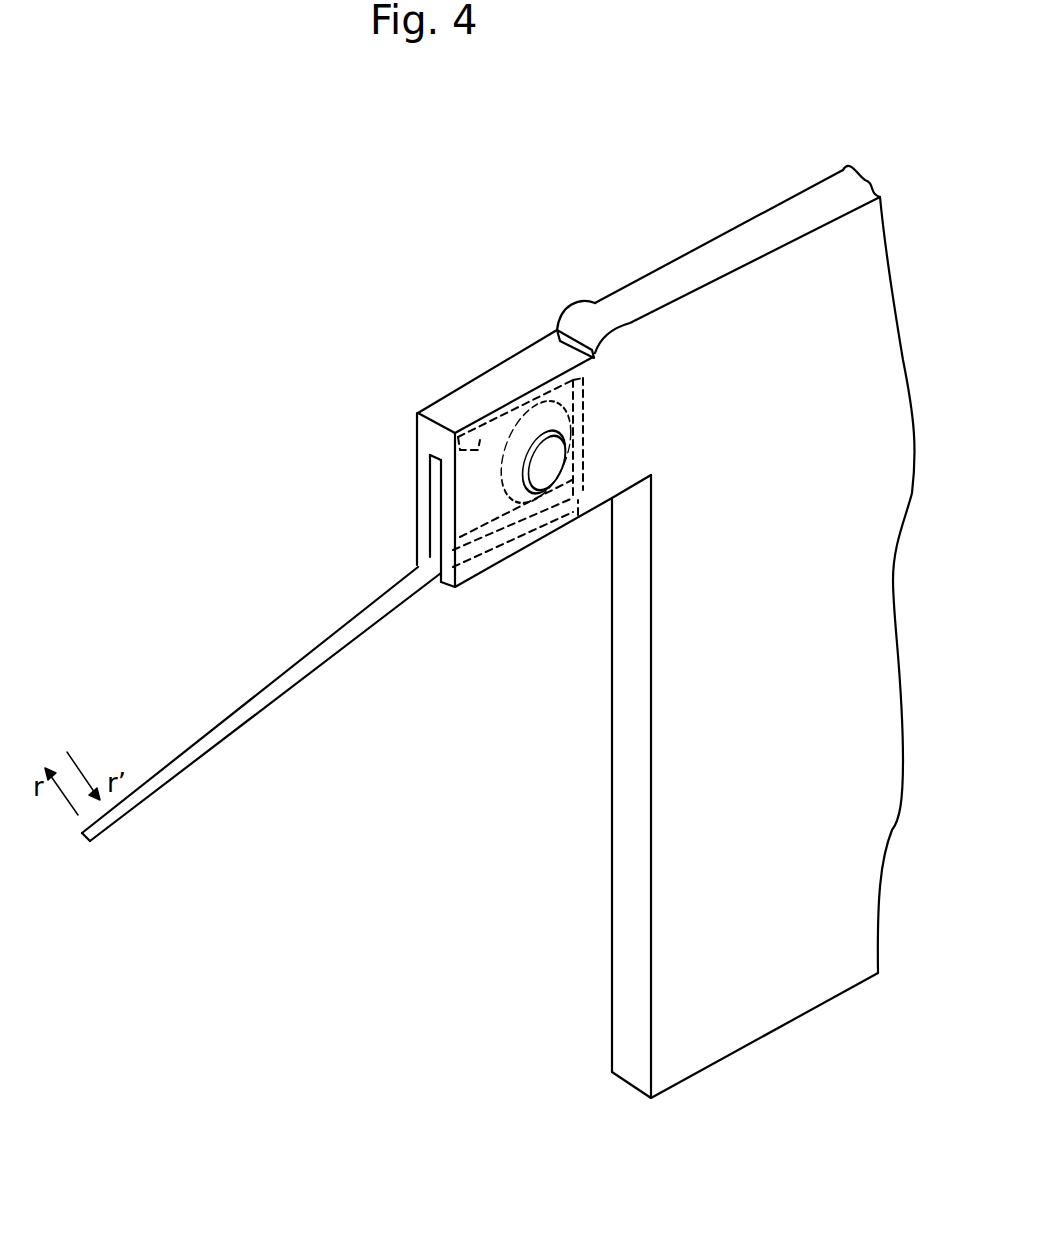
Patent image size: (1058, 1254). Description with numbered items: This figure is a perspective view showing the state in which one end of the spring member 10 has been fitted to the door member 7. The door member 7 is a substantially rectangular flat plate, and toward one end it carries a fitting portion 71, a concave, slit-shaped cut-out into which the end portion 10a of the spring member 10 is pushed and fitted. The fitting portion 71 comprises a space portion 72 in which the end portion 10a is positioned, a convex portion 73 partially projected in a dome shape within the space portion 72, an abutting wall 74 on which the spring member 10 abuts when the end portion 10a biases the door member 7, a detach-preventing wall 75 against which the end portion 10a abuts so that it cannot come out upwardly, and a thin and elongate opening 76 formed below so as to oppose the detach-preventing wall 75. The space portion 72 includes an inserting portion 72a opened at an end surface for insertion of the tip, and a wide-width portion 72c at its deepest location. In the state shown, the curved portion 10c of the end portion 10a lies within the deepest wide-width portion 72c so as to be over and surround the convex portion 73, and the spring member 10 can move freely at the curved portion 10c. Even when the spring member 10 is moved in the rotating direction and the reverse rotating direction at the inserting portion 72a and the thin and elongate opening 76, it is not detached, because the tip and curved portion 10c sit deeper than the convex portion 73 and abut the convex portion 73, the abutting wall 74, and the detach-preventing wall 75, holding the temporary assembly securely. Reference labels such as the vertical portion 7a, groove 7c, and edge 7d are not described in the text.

The door member 7 is at (770, 209).
The vertical portion of rail 7a is at (632, 973).
The groove 7c is at (424, 515).
The lower edge portion 7d is at (443, 584).
The spring member 10 is at (127, 814).
The end portion of spring member 10a is at (583, 413).
The curved portion 10c is at (587, 450).
The fitting portion 71 is at (531, 371).
The space portion 72 is at (434, 488).
The inserting portion 72a is at (433, 540).
The wide-width portion 72c is at (552, 375).
The convex portion 73 is at (512, 400).
The abutting wall 74 is at (577, 517).
The detach-preventing wall 75 is at (457, 437).
The thin and elongate opening 76 is at (500, 550).